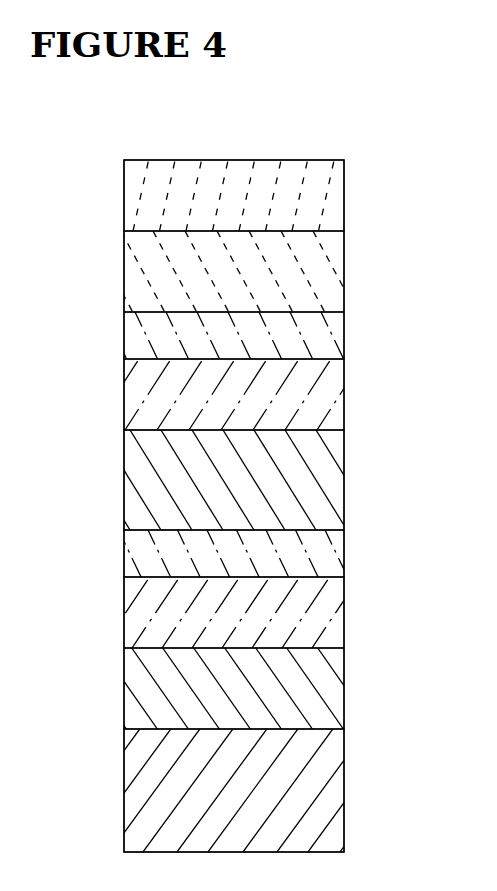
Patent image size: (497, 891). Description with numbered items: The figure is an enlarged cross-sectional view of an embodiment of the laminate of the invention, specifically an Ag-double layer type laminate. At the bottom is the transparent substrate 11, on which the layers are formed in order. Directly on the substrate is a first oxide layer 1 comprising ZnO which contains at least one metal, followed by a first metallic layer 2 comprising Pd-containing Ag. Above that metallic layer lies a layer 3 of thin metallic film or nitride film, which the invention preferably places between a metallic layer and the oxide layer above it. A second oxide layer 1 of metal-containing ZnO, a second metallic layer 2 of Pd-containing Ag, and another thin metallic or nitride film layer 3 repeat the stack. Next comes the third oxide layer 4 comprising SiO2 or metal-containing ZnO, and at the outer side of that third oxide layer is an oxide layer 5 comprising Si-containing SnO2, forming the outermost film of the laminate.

The oxide layer comprising ZnO which contains at least one metal 1 is at (310, 481).
The metallic layer comprising Pd-containing Ag 2 is at (310, 396).
The layer of thin metallic film or nitride film 3 is at (310, 336).
The oxide layer comprising SiO2 or ZnO which contains at least one metal 4 is at (310, 272).
The oxide layer comprising Si-containing SnO2 5 is at (310, 195).
The transparent substrate 11 is at (310, 770).